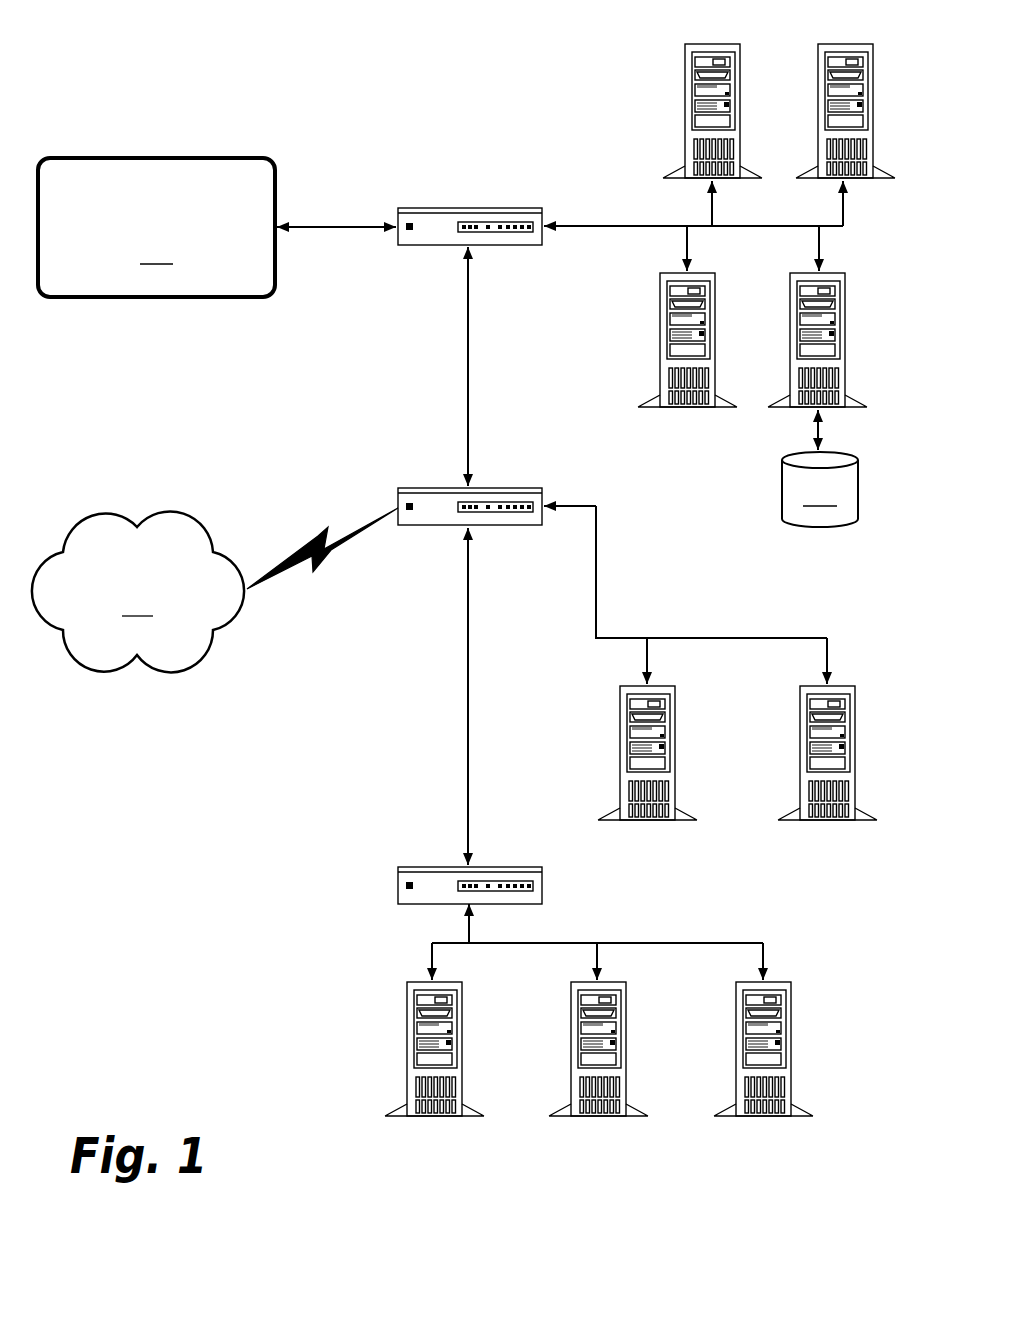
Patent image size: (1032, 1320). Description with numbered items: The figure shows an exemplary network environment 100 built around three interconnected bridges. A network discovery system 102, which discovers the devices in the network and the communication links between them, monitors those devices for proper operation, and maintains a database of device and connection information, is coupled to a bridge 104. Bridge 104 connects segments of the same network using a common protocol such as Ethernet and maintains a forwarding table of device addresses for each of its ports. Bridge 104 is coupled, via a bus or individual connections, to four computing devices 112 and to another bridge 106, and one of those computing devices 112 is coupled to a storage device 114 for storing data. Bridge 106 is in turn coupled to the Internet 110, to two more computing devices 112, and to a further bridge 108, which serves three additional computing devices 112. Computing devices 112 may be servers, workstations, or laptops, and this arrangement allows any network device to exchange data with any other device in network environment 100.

The network environment 100 is at (300, 94).
The network discovery system 102 is at (156, 227).
The bridge 104 is at (468, 208).
The bridge 106 is at (432, 488).
The bridge 108 is at (432, 867).
The Internet 110 is at (215, 590).
The computing devices 112 is at (685, 108).
The storage device 114 is at (820, 496).